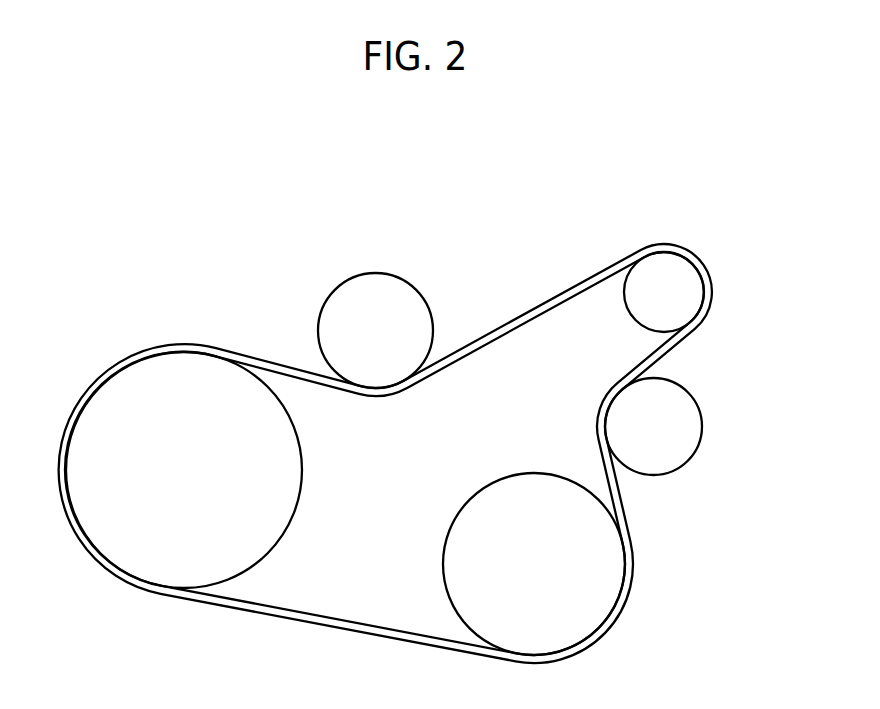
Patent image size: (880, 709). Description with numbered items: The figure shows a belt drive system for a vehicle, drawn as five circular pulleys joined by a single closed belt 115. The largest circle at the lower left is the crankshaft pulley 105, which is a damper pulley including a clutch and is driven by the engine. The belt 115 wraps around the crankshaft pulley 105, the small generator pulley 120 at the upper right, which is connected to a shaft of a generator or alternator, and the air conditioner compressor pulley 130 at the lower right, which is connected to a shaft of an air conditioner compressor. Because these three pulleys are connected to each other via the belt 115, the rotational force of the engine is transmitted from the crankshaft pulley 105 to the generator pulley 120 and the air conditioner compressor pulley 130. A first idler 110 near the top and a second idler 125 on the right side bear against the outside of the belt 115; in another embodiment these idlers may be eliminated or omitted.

The crankshaft pulley 105 is at (183, 368).
The first idler 110 is at (377, 279).
The belt 115 is at (357, 631).
The generator pulley 120 is at (660, 268).
The second idler 125 is at (700, 428).
The air conditioner compressor pulley 130 is at (612, 568).